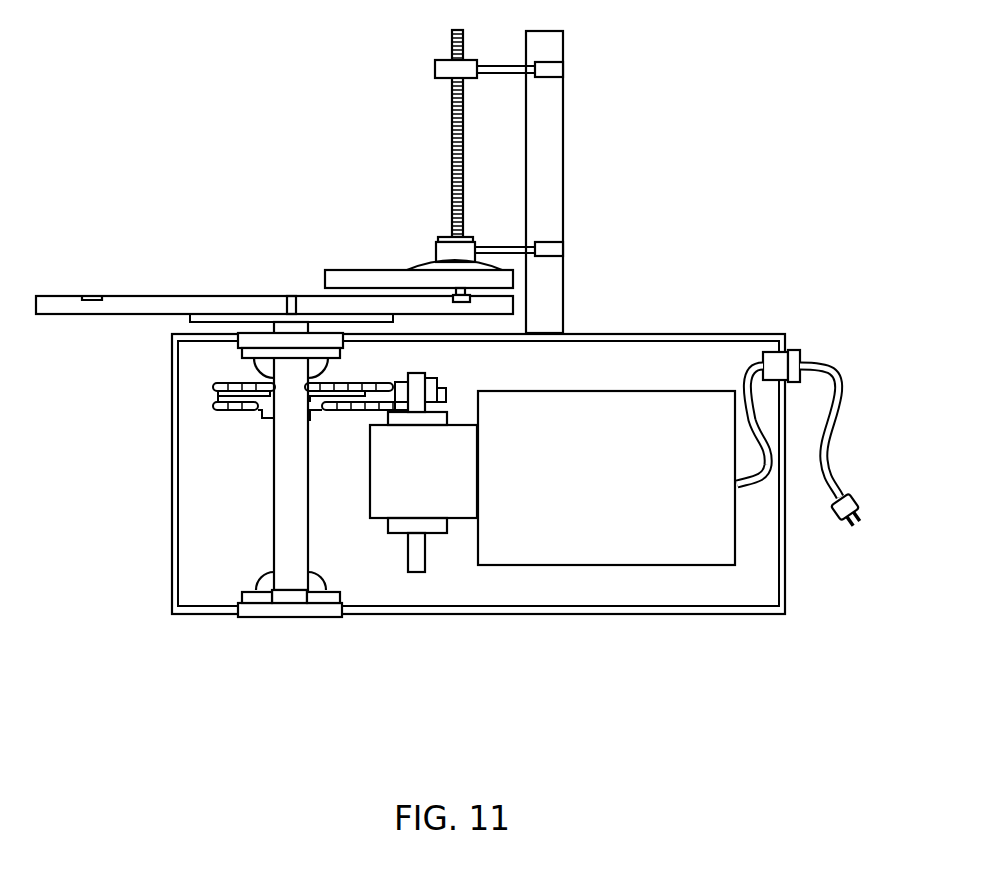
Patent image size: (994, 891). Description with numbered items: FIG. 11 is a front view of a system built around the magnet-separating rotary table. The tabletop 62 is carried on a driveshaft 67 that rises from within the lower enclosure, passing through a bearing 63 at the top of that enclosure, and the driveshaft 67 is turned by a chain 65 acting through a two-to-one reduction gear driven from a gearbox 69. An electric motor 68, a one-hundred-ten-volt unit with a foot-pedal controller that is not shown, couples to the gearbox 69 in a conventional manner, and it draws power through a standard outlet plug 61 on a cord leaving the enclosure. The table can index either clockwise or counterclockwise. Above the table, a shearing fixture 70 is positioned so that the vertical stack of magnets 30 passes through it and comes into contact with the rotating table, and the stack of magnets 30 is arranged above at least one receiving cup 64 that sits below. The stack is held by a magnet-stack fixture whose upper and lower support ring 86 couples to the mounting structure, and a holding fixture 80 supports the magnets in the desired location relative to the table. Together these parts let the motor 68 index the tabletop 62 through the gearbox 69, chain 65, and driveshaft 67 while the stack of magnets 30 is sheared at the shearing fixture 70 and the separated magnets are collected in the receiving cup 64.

The stack of magnets 30 is at (461, 135).
The support ring 86 is at (443, 78).
The shearing fixture 70 is at (348, 280).
The tabletop 62 is at (140, 306).
The receiving cup 64 is at (470, 299).
The bearing 63 is at (268, 355).
The chain 65 is at (248, 410).
The driveshaft 67 is at (287, 517).
The motor 69 is at (415, 490).
The electric motor 68 is at (561, 497).
The outlet plug 61 is at (851, 498).
The holding fixture 80 is at (624, 616).